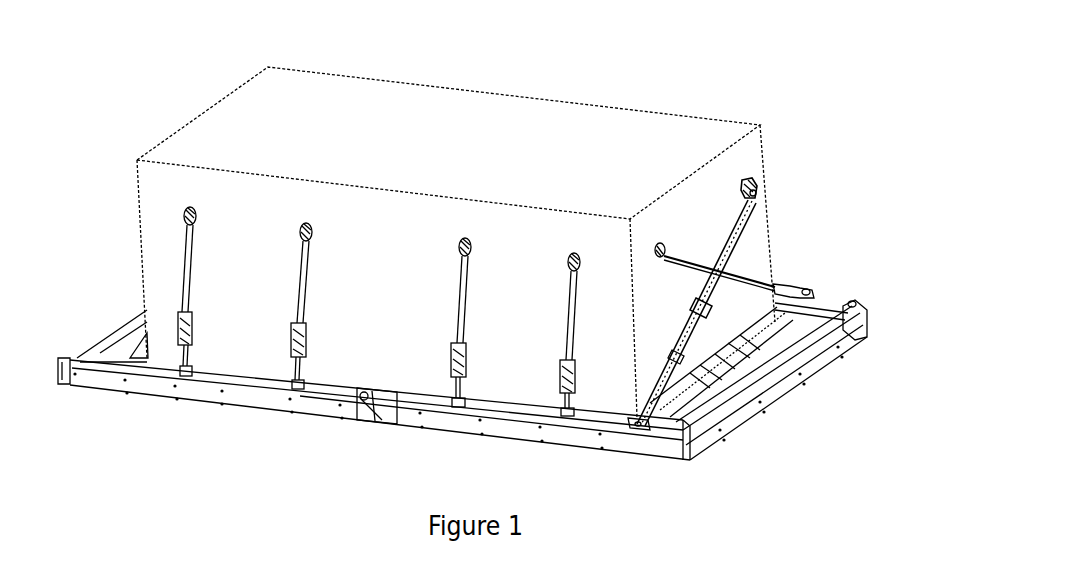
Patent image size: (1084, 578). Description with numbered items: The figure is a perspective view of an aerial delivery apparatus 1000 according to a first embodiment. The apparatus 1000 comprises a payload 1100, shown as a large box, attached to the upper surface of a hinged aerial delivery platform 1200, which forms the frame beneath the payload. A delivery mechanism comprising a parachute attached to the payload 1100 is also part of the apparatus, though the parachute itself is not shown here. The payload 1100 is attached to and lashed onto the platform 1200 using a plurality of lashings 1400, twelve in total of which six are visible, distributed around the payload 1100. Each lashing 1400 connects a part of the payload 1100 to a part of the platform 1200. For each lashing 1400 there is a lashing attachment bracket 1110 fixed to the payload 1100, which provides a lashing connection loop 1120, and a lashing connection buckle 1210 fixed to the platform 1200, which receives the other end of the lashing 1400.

The aerial delivery apparatus 1000 is at (776, 71).
The payload 1100 is at (598, 133).
The lashing attachment bracket 1110 is at (752, 183).
The lashing connection loop 1120 is at (757, 194).
The hinged aerial delivery platform 1200 is at (727, 421).
The lashing connection buckle 1210 is at (637, 430).
The lashing 1400 is at (687, 320).